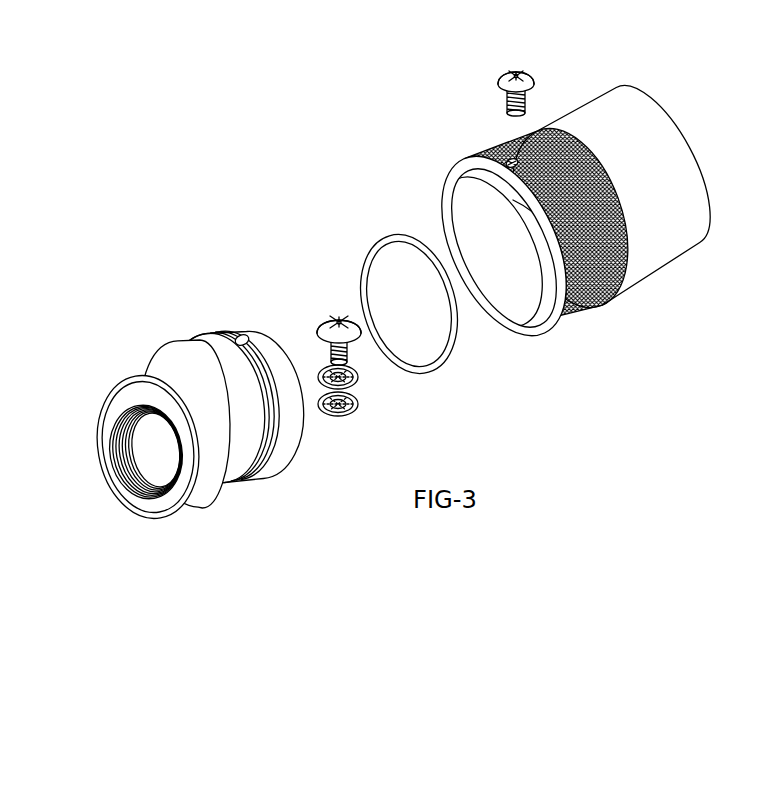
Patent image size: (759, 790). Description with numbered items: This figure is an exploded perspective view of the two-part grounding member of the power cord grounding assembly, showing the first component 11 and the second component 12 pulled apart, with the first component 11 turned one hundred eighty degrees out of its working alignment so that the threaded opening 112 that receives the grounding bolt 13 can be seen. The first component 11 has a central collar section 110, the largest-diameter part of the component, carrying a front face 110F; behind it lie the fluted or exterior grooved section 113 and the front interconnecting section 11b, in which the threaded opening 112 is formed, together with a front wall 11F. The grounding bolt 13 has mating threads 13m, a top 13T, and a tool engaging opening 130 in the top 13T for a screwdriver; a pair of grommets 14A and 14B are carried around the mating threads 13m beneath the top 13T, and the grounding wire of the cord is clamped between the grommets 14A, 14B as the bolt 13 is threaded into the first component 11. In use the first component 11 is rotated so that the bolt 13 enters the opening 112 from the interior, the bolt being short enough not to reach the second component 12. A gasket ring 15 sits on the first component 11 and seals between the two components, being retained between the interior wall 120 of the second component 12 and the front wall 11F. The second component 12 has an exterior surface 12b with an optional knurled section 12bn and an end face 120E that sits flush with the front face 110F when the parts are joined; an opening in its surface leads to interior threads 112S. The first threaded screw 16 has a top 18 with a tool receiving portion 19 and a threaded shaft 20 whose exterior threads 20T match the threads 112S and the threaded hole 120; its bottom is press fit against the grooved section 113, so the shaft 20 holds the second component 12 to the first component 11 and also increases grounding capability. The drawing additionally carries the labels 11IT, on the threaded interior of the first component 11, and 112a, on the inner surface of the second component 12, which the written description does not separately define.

The first component 11 is at (180, 440).
The central collar section 110 is at (163, 350).
The front face 110F is at (325, 507).
The internal thread 11IT is at (133, 462).
The threaded external opening 112 is at (230, 330).
The front wall 11F is at (243, 325).
The front interconnecting section 11b is at (250, 366).
The exterior grooved section 113 is at (335, 477).
The grounding bolt 13 is at (307, 295).
The tool engaging opening 130 is at (307, 293).
The top 13T is at (352, 323).
The mating threads 13m is at (325, 343).
The grommet 14A is at (415, 394).
The grommet 14B is at (415, 427).
The gasket ring 15 is at (370, 248).
The second component 12 is at (561, 194).
The exterior surface 12b is at (679, 240).
The knurled section 12bn is at (555, 224).
The interior wall 120 is at (486, 265).
The end face 120E is at (557, 323).
The inner surface of sleeve 112a is at (520, 303).
The interior threads 112S is at (497, 143).
The first threaded bolt 16 is at (520, 61).
The top 18 is at (513, 64).
The tool receiving portion 19 is at (510, 70).
The threaded shaft 20 is at (520, 91).
The exterior threads 20T is at (580, 88).